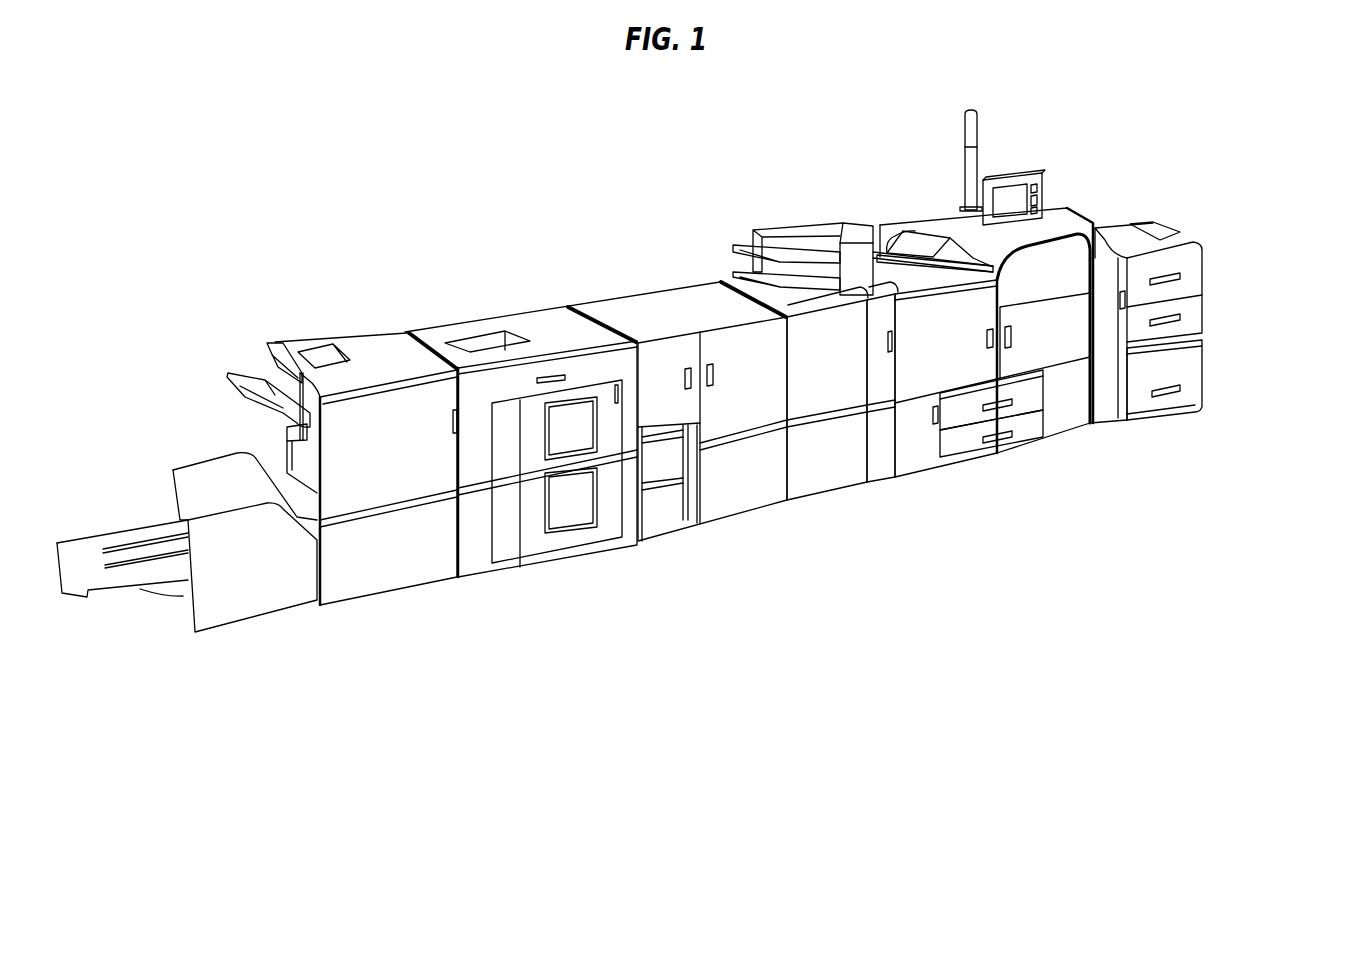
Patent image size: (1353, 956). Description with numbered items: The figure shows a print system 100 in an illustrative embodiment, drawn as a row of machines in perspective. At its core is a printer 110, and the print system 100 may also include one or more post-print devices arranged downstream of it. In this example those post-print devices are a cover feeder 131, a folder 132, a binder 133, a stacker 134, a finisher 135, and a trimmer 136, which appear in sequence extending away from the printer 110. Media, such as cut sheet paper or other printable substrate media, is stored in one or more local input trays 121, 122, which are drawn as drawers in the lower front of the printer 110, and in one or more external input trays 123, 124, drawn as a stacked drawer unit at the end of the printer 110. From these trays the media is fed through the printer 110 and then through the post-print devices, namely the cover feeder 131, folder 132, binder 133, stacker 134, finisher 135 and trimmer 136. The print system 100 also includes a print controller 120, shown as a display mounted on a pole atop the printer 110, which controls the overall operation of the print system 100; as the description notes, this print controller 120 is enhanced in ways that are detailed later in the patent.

The print system 100 is at (255, 125).
The printer 110 is at (1043, 348).
The print controller 120 is at (1013, 170).
The local input tray 121 is at (970, 440).
The local input tray 122 is at (1025, 403).
The external input tray 123 is at (1195, 385).
The external input tray 124 is at (1193, 282).
The cover feeder 131 is at (883, 440).
The folder 132 is at (833, 468).
The binder 133 is at (680, 310).
The stacker 134 is at (547, 327).
The finisher 135 is at (390, 330).
The trimmer 136 is at (258, 588).